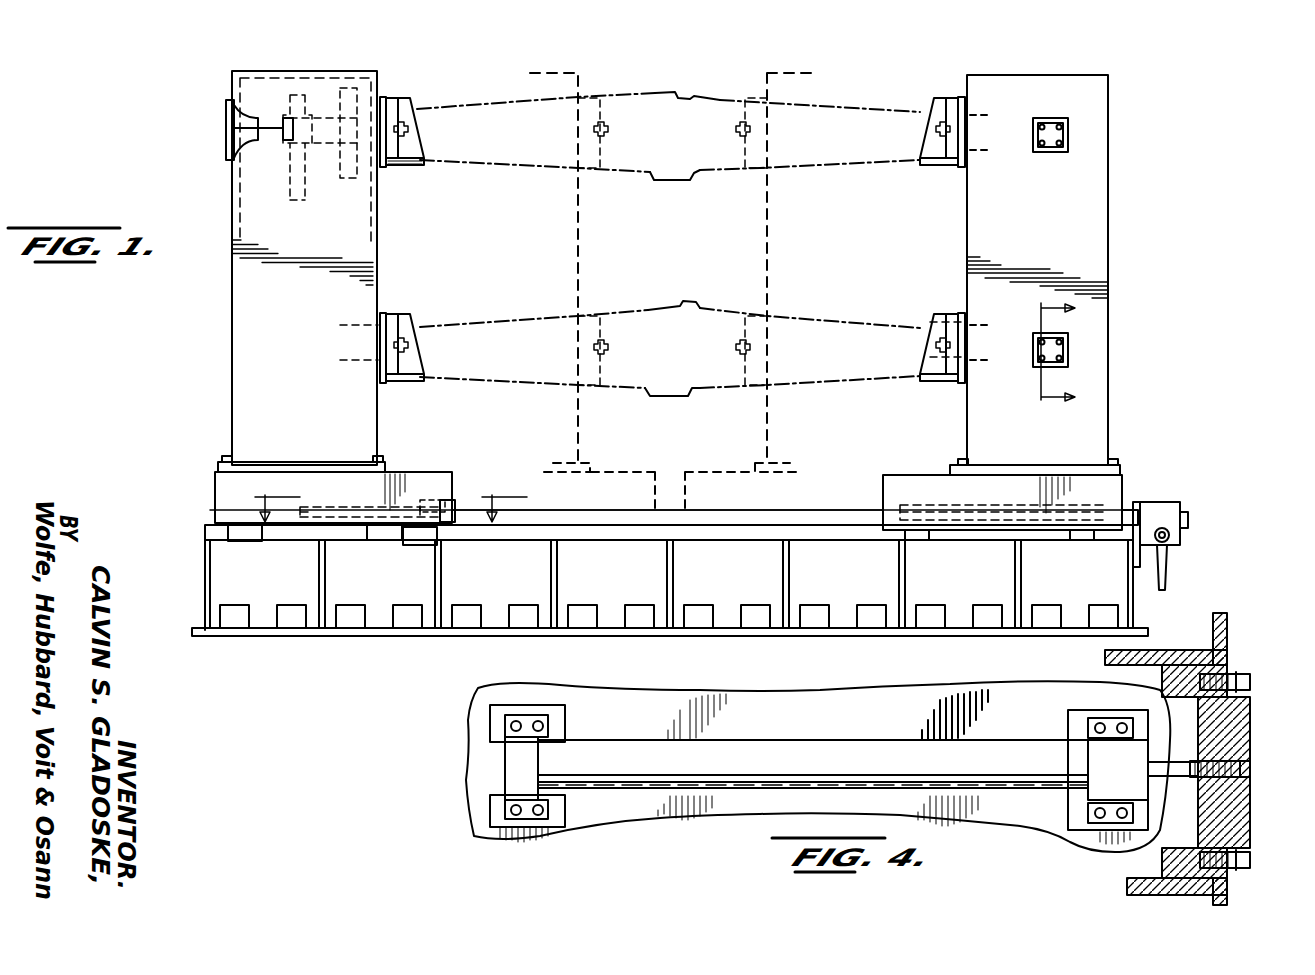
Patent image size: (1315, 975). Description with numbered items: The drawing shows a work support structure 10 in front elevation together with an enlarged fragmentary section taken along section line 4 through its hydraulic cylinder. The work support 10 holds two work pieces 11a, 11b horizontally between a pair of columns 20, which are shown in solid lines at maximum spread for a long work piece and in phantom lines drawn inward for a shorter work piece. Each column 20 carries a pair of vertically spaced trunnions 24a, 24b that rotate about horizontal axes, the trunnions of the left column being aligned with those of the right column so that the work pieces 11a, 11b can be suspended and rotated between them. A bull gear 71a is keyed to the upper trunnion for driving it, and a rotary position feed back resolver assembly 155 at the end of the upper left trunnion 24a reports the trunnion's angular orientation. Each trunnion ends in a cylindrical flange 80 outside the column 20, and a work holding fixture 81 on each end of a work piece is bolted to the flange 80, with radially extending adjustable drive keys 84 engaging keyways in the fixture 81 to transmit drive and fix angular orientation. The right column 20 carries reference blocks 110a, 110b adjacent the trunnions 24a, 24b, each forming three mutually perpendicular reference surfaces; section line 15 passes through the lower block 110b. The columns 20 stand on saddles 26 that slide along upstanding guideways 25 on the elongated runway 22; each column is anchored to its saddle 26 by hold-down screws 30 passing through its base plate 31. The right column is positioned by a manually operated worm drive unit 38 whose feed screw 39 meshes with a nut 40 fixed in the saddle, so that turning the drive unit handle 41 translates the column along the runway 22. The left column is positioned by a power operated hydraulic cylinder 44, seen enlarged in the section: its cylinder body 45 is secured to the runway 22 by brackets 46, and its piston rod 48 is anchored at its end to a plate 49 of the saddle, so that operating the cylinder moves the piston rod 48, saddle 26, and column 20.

In FIG. 1, the work support structure 10 is at (1153, 84).
In FIG. 1, the columns 20 is at (580, 236).
In FIG. 1, the rotary position feed back resolver assembly 155 is at (238, 92).
In FIG. 1, the upper trunnion 24a is at (302, 110).
In FIG. 1, the lower trunnion 24b is at (355, 328).
In FIG. 1, the bull gear 71a is at (352, 182).
In FIG. 1, the cylindrical flange 80 is at (390, 96).
In FIG. 1, the work holding fixture 81 is at (408, 103).
In FIG. 1, the adjustable drive keys 84 is at (410, 128).
In FIG. 1, the upper work piece 11a is at (685, 88).
In FIG. 1, the lower work piece 11b is at (675, 305).
In FIG. 1, the upper reference block 110a is at (1075, 142).
In FIG. 1, the lower reference block 110b is at (1078, 356).
In FIG. 1, the section line 15- 15 is at (1039, 355).
In FIG. 1, the saddle 26 is at (212, 502).
In FIG. 4, the saddle 26 is at (1228, 646).
In FIG. 1, the hold-down screws 30 is at (226, 458).
In FIG. 1, the base plate 31 is at (215, 468).
In FIG. 1, the feed screw 39 is at (978, 505).
In FIG. 1, the section line 4- 4 is at (390, 495).
In FIG. 1, the hydraulic cylinder 44 is at (360, 510).
In FIG. 4, the hydraulic cylinder 44 is at (780, 740).
In FIG. 1, the plate 49 is at (470, 510).
In FIG. 4, the plate 49 is at (1248, 716).
In FIG. 1, the guideways 25 is at (605, 522).
In FIG. 1, the elongated runway 22 is at (208, 580).
In FIG. 4, the elongated runway 22 is at (962, 698).
In FIG. 1, the nut 40 is at (1128, 505).
In FIG. 1, the worm drive unit 38 is at (1172, 505).
In FIG. 1, the drive unit handle 41 is at (1168, 576).
In FIG. 4, the brackets 46 is at (552, 728).
In FIG. 4, the cylinder body 45 is at (850, 745).
In FIG. 4, the piston rod 48 is at (1162, 768).